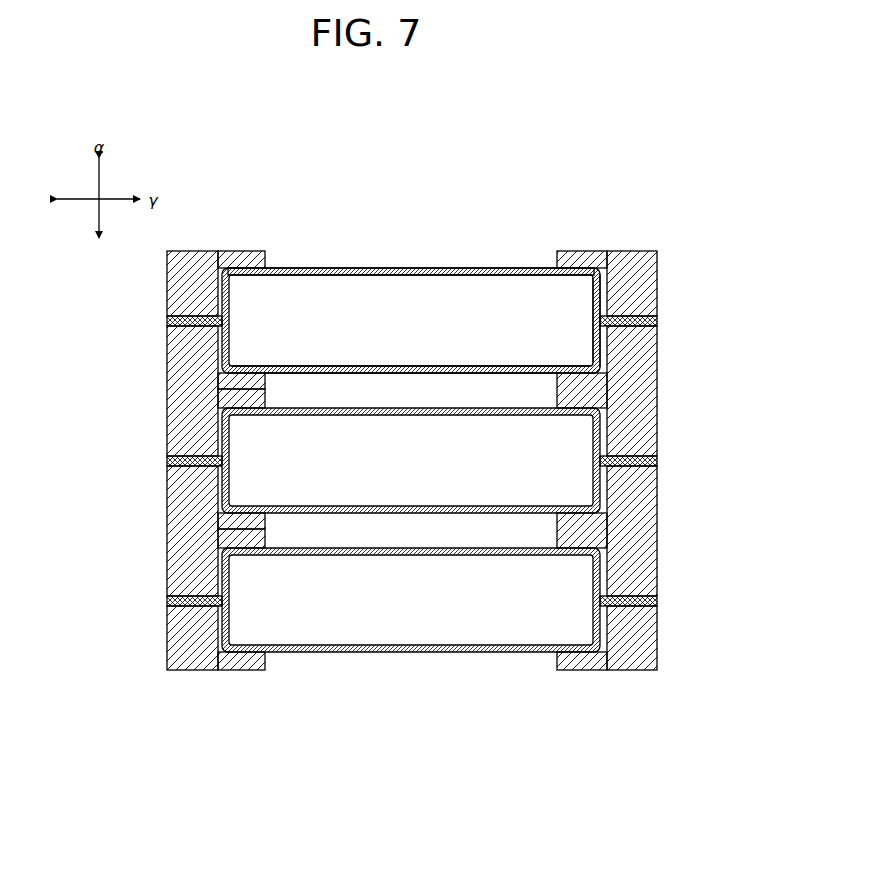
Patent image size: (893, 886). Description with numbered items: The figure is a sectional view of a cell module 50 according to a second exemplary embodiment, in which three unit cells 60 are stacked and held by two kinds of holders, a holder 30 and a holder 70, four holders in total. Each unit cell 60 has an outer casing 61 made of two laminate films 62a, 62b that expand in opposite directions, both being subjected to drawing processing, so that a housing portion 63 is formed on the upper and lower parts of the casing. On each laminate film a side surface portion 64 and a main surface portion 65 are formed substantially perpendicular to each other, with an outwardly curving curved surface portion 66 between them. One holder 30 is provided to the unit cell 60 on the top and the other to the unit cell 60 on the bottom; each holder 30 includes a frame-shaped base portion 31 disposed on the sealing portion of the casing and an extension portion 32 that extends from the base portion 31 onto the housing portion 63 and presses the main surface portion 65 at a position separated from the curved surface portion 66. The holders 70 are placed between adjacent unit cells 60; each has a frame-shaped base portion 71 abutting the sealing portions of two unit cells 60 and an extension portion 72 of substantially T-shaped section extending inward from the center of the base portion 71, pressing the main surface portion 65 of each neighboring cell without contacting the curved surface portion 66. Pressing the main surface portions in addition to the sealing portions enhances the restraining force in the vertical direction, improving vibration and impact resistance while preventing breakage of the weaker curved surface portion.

The cell module 50 is at (655, 162).
The holder 30 is at (631, 461).
The base portion 31 is at (653, 461).
The extension portion 32 is at (631, 461).
The unit cell 60 is at (400, 333).
The outer casing 61 is at (411, 236).
The housing portion 63 is at (400, 268).
The laminate film 62a is at (476, 268).
The laminate film 62b is at (513, 365).
The side surface portion 64 is at (215, 297).
The main surface portion 65 is at (263, 251).
The curved surface portion 66 is at (219, 251).
The holder 70 is at (651, 461).
The base portion 71 is at (640, 413).
The extension portion 72 is at (585, 386).